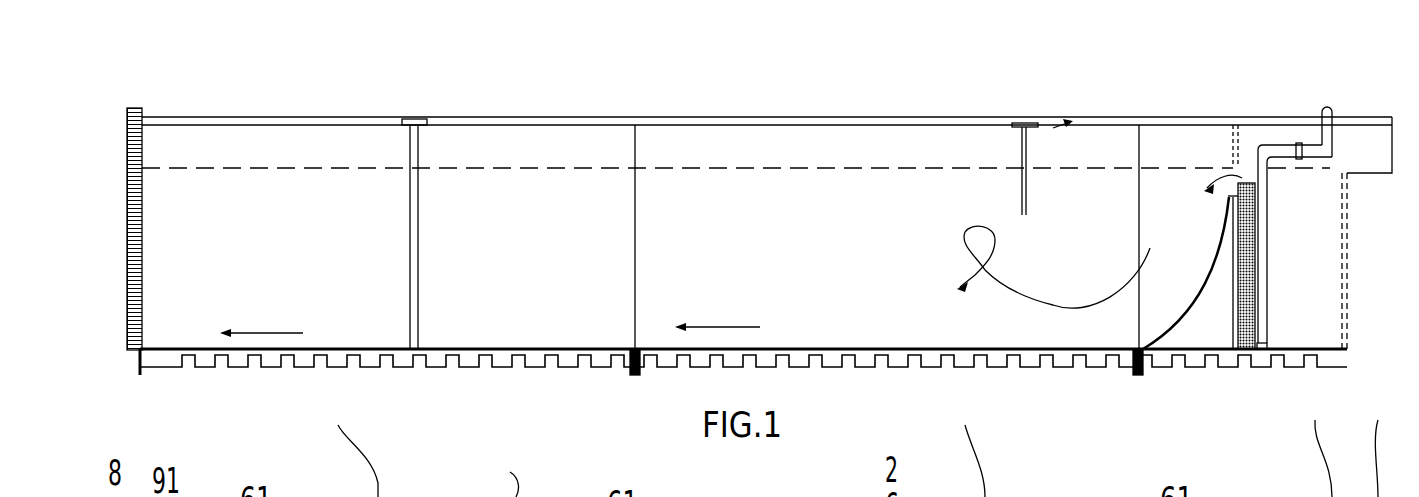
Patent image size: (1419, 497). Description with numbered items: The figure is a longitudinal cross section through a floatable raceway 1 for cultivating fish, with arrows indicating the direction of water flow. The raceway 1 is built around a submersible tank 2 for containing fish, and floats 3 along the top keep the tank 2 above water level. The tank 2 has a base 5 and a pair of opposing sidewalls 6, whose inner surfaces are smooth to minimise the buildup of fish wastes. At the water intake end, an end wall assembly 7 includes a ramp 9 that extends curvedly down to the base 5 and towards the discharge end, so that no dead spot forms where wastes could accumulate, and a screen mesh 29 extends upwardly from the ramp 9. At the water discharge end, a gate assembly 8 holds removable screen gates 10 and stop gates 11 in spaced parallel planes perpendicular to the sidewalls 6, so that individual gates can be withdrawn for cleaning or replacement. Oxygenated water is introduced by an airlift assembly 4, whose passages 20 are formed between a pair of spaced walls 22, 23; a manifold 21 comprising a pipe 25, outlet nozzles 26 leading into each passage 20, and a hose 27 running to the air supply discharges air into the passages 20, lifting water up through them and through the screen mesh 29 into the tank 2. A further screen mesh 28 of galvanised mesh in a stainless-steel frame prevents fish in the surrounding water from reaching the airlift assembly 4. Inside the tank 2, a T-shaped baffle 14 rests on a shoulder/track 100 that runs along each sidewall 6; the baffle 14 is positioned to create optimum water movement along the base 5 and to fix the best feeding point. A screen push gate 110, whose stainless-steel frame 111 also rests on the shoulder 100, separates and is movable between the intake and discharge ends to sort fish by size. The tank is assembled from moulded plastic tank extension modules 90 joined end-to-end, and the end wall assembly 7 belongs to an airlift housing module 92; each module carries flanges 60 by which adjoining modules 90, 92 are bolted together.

The floatable raceway 1 is at (546, 408).
The submersible tank 2 is at (765, 252).
The floats 3 is at (474, 132).
The airlift assembly 4 is at (1268, 327).
The base 5 is at (490, 318).
The sidewalls 6 is at (585, 214).
The end wall assembly 7 is at (1166, 318).
The gate assembly 8 is at (127, 262).
The ramp 9 is at (1192, 300).
The screen gates 10 is at (127, 121).
The stop gates 11 is at (143, 135).
The baffle 14 is at (1020, 157).
The passages 20 is at (1245, 182).
The manifold 21 is at (1268, 298).
The spaced wall 22 is at (1233, 307).
The spaced wall 23 is at (1253, 242).
The pipe 25 is at (1285, 150).
The outlet nozzles 26 is at (1256, 350).
The hose 27 is at (1323, 102).
The screen mesh 28 is at (1343, 222).
The screen mesh 29 is at (1230, 156).
The flanges 60 is at (635, 376).
The tank extension module 90 is at (348, 370).
The airlift housing module 92 is at (1343, 369).
The shoulder/track 100 is at (717, 123).
The screen push gate 110 is at (417, 140).
The frame 111 is at (400, 131).